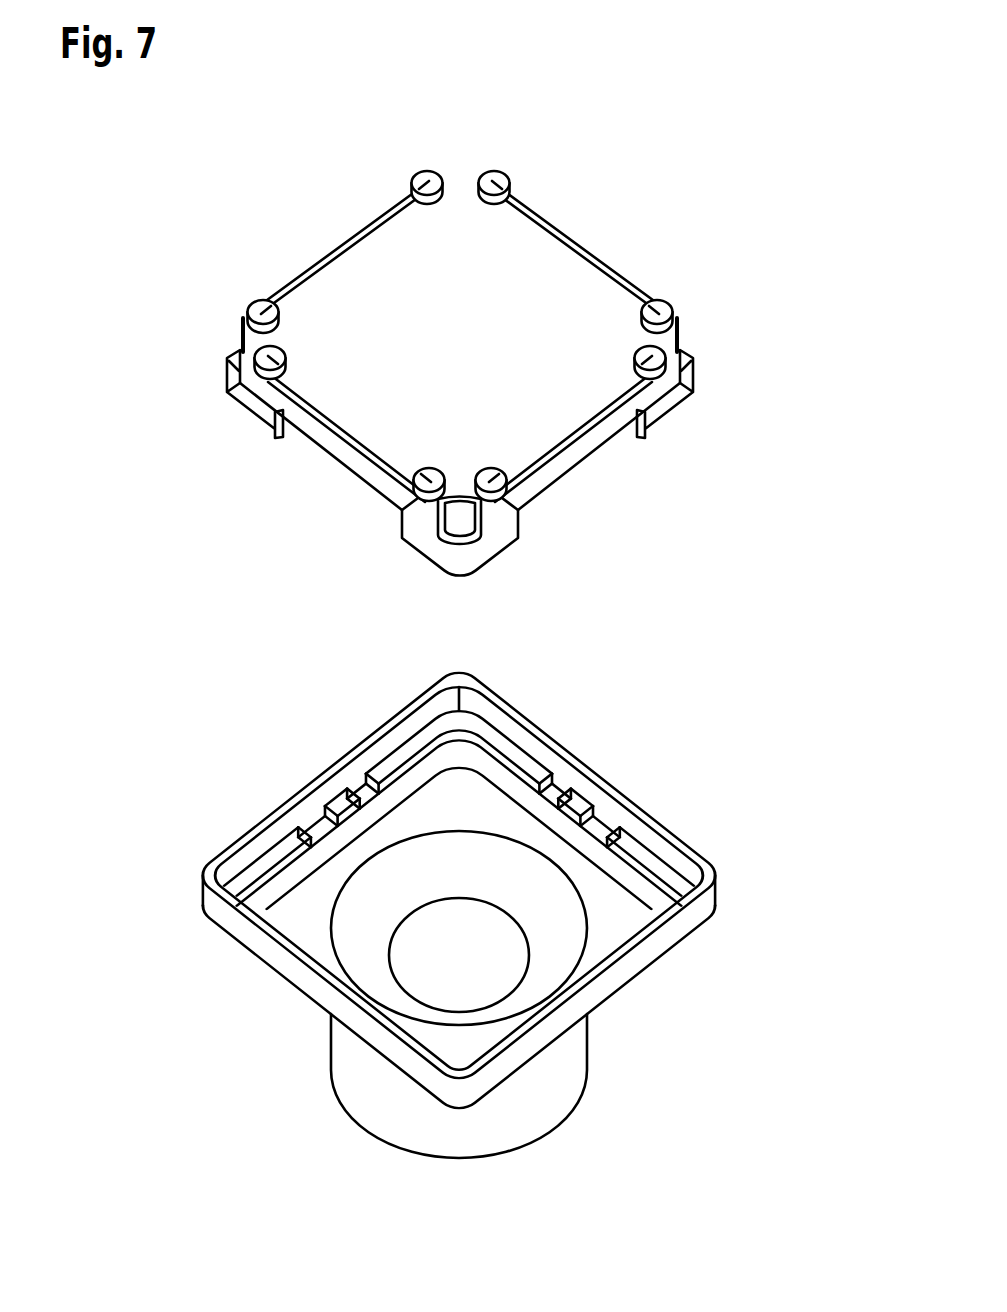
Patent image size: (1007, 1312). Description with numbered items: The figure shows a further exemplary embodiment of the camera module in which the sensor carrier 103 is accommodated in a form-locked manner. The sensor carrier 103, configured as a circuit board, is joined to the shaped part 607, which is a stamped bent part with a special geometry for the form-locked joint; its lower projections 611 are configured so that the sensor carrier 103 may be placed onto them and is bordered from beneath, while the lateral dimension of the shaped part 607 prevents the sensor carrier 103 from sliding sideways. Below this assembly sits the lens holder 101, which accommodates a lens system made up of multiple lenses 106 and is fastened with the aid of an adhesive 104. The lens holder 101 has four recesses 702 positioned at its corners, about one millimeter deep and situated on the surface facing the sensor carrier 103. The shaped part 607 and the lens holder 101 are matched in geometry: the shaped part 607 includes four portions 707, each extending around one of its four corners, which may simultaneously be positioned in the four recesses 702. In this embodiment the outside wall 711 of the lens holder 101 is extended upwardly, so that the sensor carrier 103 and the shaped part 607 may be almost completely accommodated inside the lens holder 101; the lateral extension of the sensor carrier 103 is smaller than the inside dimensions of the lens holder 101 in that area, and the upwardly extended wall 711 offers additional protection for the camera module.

The lens holder 101 is at (558, 1093).
The sensor carrier 103 is at (537, 253).
The adhesive 104 is at (510, 762).
The lenses 106 is at (440, 957).
The shaped part 607 is at (318, 432).
The lower projections 611 is at (481, 178).
The recesses 702 is at (292, 832).
The portions 707 is at (226, 391).
The outside wall 711 is at (670, 860).